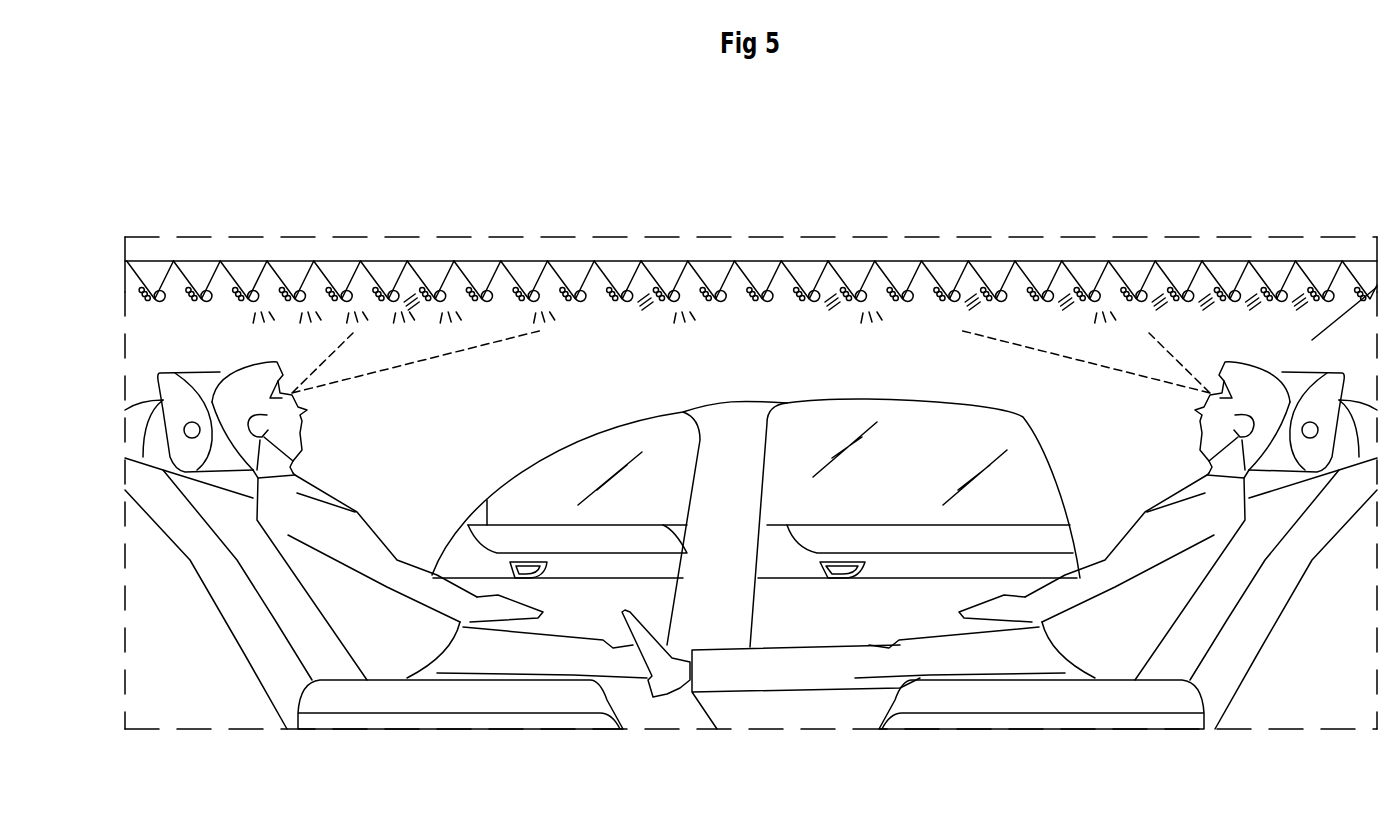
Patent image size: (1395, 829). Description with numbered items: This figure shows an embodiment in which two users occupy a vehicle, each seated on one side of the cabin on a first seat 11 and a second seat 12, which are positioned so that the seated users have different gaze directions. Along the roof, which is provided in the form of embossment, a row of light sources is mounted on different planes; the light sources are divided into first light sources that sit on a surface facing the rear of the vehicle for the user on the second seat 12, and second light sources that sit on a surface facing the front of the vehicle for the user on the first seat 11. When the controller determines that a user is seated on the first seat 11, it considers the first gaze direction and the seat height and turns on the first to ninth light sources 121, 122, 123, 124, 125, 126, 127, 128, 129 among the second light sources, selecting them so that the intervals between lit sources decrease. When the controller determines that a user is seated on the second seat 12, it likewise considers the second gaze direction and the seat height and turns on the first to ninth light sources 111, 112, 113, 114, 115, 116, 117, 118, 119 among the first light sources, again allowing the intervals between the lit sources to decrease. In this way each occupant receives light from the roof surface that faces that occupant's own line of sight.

The first seat 11 is at (427, 717).
The second seat 12 is at (1070, 717).
The first light source 111 is at (1095, 288).
The second light source 112 is at (862, 288).
The third light source 113 is at (676, 288).
The fourth light source 114 is at (536, 288).
The fifth light source 115 is at (467, 288).
The sixth light source 116 is at (396, 288).
The seventh light source 117 is at (349, 288).
The eighth light source 118 is at (302, 288).
The ninth light source 119 is at (256, 288).
The first light source 121 is at (440, 289).
The second light source 122 is at (656, 287).
The third light source 123 is at (842, 287).
The fourth light source 124 is at (982, 287).
The fifth light source 125 is at (1077, 287).
The sixth light source 126 is at (1170, 287).
The seventh light source 127 is at (1217, 287).
The eighth light source 128 is at (1264, 287).
The ninth light source 129 is at (1311, 287).